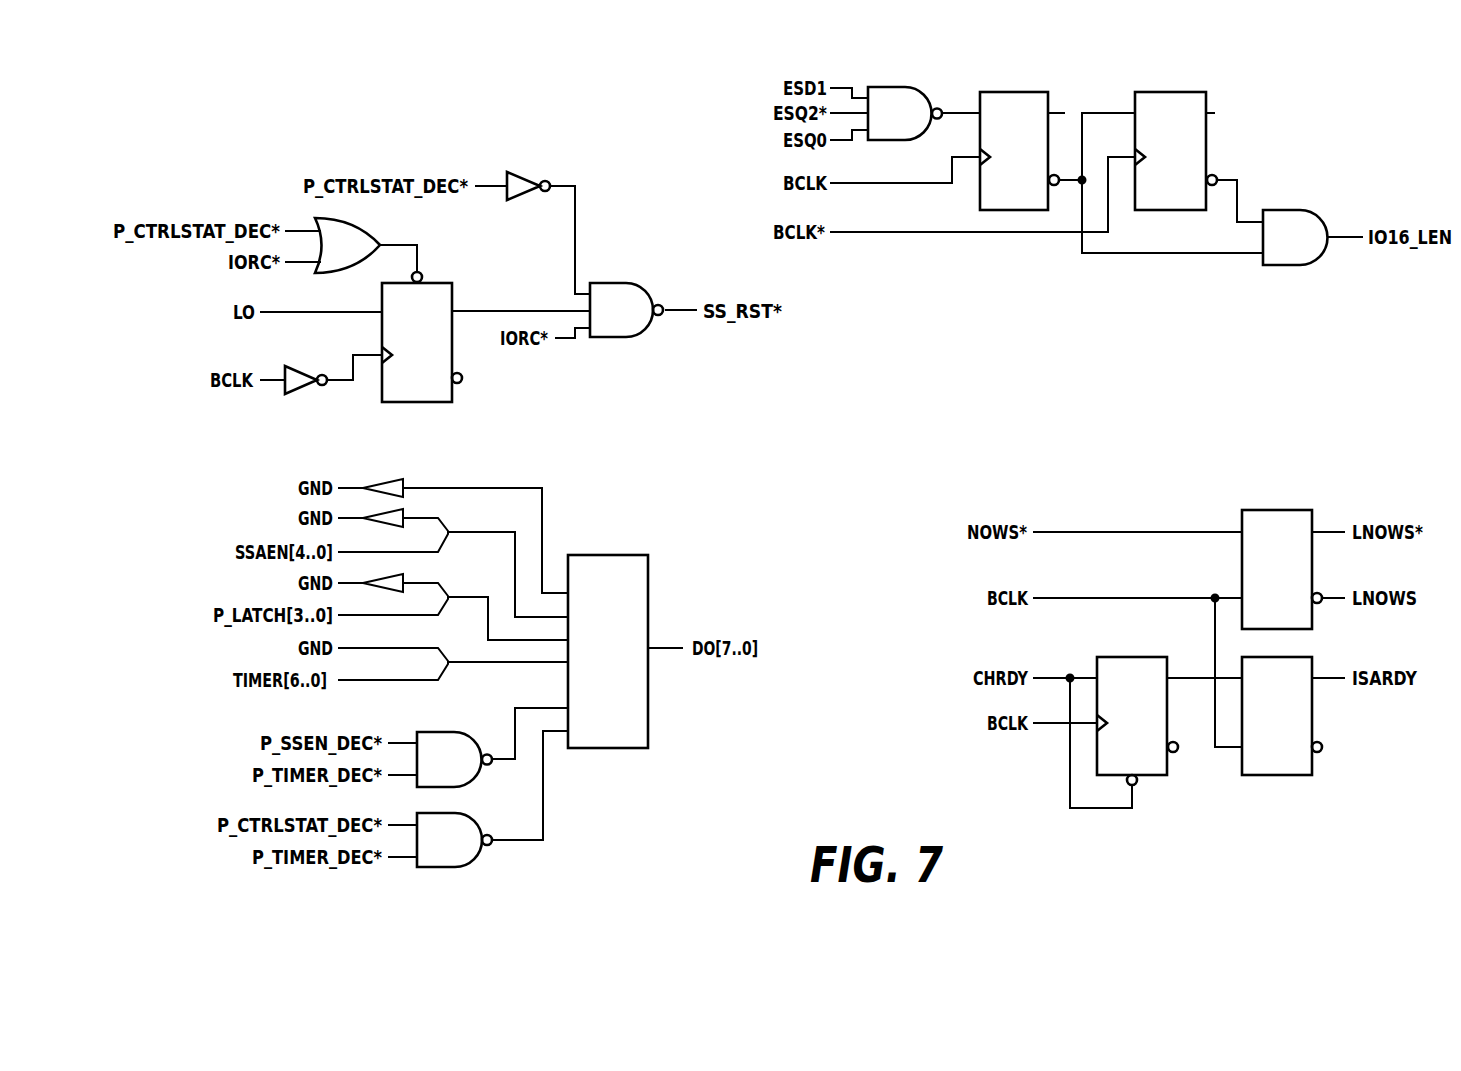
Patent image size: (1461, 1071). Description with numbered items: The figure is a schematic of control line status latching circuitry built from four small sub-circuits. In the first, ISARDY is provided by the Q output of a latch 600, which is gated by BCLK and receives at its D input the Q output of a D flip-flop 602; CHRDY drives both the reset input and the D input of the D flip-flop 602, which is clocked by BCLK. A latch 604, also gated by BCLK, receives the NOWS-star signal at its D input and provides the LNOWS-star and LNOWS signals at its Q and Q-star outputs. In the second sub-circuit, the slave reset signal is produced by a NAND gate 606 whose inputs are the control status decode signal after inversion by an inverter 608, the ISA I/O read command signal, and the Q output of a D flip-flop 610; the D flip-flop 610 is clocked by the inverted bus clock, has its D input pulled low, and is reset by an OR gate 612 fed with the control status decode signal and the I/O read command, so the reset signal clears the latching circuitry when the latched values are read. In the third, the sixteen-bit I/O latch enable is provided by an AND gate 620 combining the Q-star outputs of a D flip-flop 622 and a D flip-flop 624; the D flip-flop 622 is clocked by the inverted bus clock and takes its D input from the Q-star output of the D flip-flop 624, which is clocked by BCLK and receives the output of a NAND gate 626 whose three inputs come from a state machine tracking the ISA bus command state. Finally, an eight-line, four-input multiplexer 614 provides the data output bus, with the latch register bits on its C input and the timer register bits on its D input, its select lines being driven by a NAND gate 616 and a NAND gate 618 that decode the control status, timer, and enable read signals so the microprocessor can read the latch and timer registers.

The latch 600 is at (1313, 721).
The D flip-flop 602 is at (1160, 775).
The latch 604 is at (1297, 510).
The NAND gate 606 is at (635, 337).
The inverter 608 is at (513, 170).
The D flip-flop 610 is at (425, 402).
The OR gate 612 is at (373, 232).
The multiplexer 614 is at (617, 555).
The NAND gate 616 is at (435, 867).
The NAND gate 618 is at (447, 732).
The AND gate 620 is at (1303, 265).
The D flip-flop 622 is at (1193, 92).
The D flip-flop 624 is at (1037, 92).
The NAND gate 626 is at (905, 87).